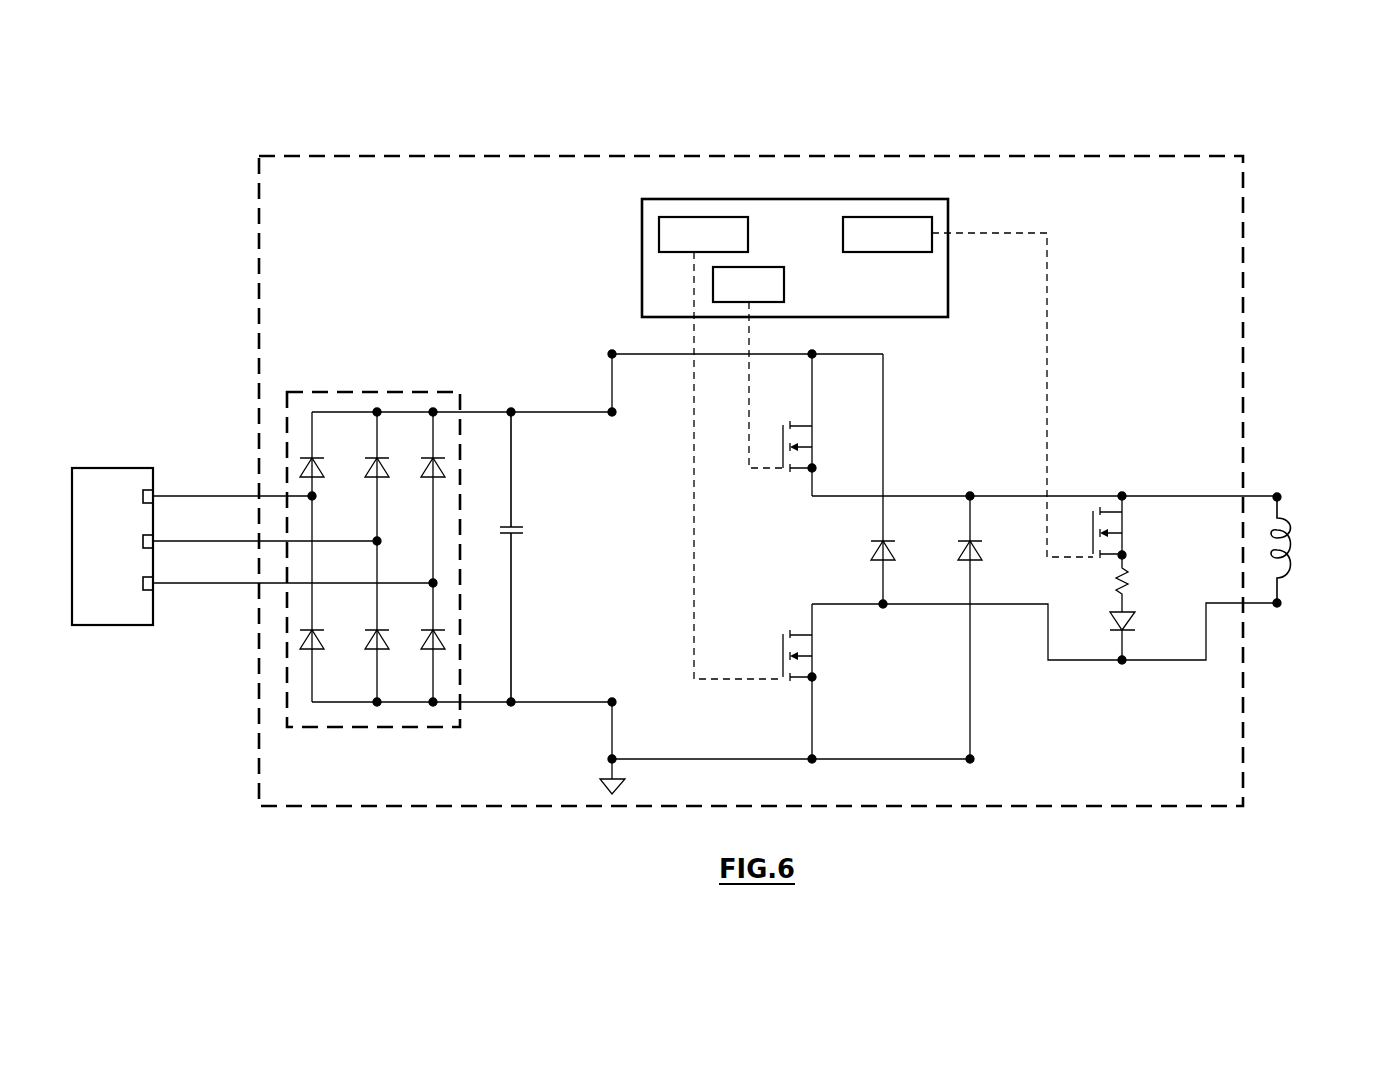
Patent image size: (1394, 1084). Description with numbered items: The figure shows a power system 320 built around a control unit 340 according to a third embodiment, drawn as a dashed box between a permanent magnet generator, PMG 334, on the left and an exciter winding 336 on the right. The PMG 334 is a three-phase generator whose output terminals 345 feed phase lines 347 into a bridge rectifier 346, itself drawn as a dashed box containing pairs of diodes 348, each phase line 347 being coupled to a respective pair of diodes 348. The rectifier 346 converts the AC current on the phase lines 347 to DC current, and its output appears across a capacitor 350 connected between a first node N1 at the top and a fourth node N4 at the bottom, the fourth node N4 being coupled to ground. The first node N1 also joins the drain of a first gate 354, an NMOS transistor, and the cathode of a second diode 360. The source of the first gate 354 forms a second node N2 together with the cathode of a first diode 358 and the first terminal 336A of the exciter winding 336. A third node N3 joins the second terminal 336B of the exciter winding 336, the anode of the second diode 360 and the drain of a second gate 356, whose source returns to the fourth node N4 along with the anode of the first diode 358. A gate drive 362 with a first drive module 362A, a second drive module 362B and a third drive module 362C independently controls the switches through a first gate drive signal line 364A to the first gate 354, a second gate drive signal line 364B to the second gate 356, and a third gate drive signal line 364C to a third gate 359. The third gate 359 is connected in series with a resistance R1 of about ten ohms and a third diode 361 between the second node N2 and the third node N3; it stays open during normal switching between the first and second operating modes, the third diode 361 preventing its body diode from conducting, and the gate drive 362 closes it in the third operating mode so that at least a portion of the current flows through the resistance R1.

The power system 320 is at (147, 183).
The control unit 340 is at (296, 154).
The PMG 334 is at (128, 563).
The output terminals 345 is at (149, 493).
The phase lines 347 is at (243, 582).
The diodes 348 is at (364, 456).
The bridge rectifier 346 is at (360, 390).
The capacitor 350 is at (514, 527).
The gate drive 362 is at (641, 254).
The first drive module 362A is at (748, 232).
The second drive module 362B is at (784, 284).
The third drive module 362C is at (850, 252).
The first gate drive signal line 364A is at (749, 367).
The second gate drive signal line 364B is at (694, 462).
The third gate drive signal line 364C is at (1049, 298).
The first gate 354 is at (812, 458).
The second gate 356 is at (812, 679).
The first diode 358 is at (970, 541).
The second diode 360 is at (883, 541).
The third gate 359 is at (1122, 545).
The resistance R1 is at (1125, 576).
The third diode 361 is at (1128, 620).
The exciter winding 336 is at (1292, 548).
The first terminal 336A is at (1277, 497).
The second terminal 336B is at (1277, 603).
The first node N1 is at (612, 354).
The second node N2 is at (970, 496).
The third node N3 is at (883, 604).
The fourth node N4 is at (612, 702).